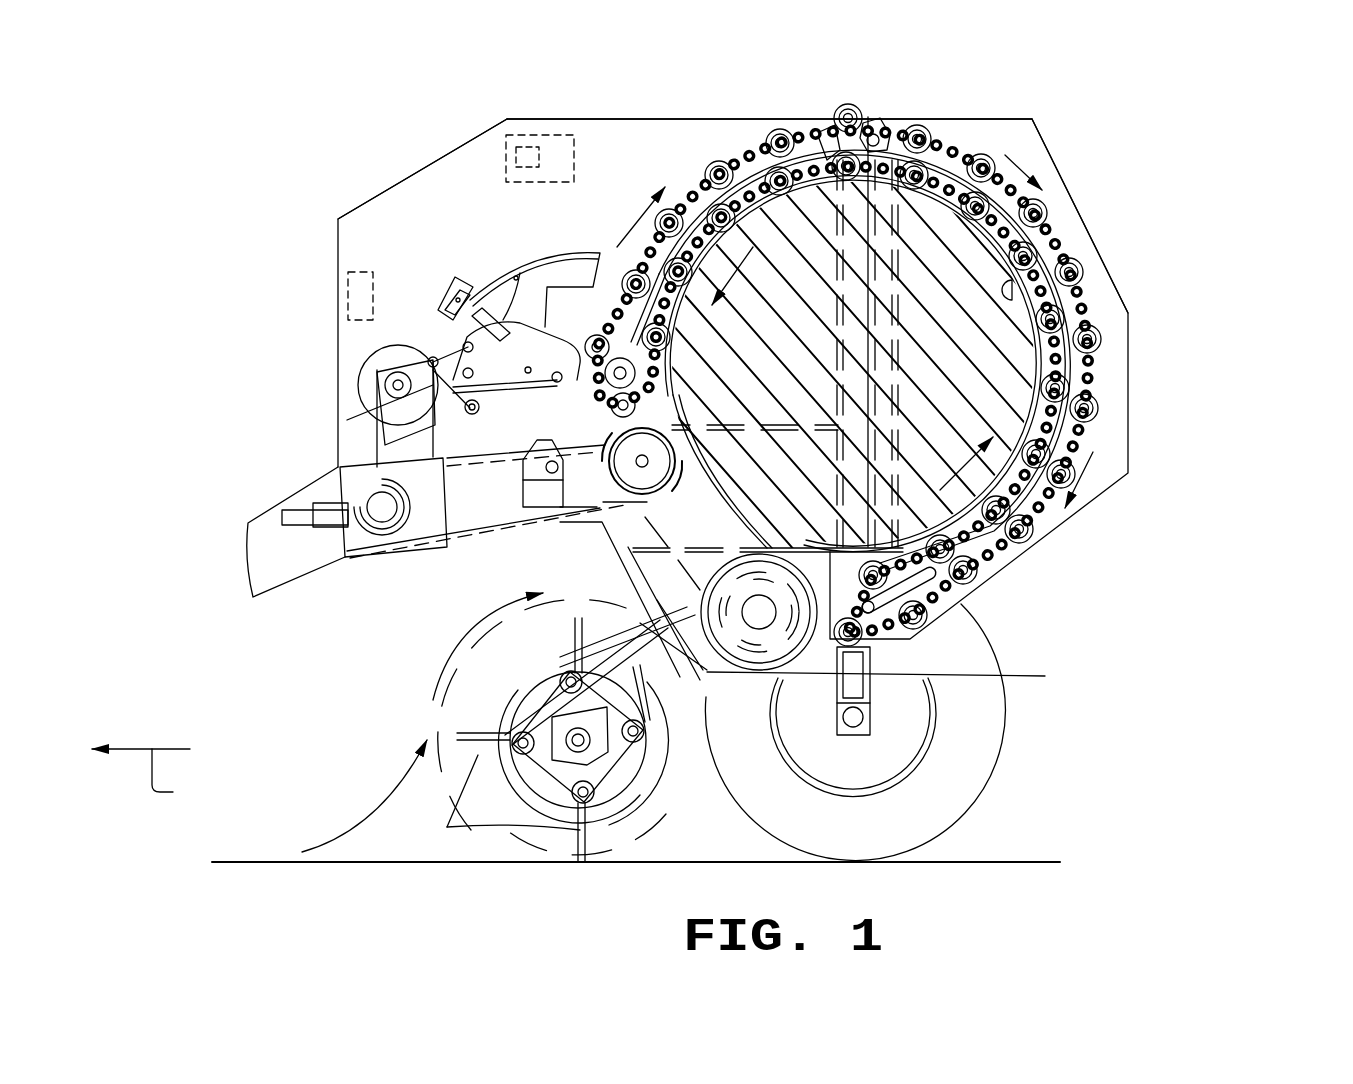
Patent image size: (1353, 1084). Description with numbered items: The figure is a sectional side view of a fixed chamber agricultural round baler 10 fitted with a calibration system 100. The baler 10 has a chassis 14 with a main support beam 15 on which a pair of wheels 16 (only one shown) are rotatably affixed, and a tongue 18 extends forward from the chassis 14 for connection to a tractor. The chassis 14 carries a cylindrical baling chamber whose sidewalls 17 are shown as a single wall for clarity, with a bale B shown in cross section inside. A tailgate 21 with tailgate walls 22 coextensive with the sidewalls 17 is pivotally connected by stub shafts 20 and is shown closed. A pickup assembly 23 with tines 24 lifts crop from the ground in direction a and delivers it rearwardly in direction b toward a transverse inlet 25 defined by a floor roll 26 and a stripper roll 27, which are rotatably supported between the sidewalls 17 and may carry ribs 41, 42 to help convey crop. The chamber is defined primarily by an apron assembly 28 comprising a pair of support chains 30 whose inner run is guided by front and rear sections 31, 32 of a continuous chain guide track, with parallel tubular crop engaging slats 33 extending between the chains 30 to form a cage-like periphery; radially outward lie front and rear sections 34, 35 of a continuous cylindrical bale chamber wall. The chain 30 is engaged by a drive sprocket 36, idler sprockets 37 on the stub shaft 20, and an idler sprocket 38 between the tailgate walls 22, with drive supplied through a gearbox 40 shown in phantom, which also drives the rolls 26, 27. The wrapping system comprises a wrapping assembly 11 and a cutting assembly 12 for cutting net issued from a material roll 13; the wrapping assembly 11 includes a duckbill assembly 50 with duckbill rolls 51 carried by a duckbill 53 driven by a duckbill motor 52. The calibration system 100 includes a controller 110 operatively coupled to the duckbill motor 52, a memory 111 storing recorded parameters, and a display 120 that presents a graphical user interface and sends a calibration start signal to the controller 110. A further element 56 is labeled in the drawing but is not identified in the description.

The round baler 10 is at (1193, 108).
The wrapping assembly 11 is at (452, 270).
The cutting assembly 12 is at (513, 482).
The material roll 13 is at (392, 370).
The chassis 14 is at (592, 118).
The main support beam 15 is at (870, 676).
The wheels 16 is at (993, 750).
The sidewalls 17 is at (440, 180).
The tongue 18 is at (277, 600).
The stub shafts 20 is at (880, 112).
The tailgate 21 is at (1100, 250).
The tailgate walls 22 is at (1110, 458).
The pickup assembly 23 is at (442, 723).
The tines 24 is at (494, 802).
The transverse inlet 25 is at (638, 535).
The floor roll 26 is at (740, 672).
The stripper roll 27 is at (607, 480).
The apron assembly 28 is at (1047, 223).
The support chains 30 is at (1083, 302).
The front section of chain guide track 31 is at (710, 190).
The rear section of chain guide track 32 is at (1027, 300).
The crop engaging slats 33 is at (778, 137).
The front section of bale chamber wall 34 is at (827, 147).
The rear section of bale chamber wall 35 is at (943, 167).
The drive sprocket 36 is at (600, 345).
The idler sprockets 37 is at (867, 112).
The idler sprocket 38 is at (930, 578).
The gearbox 40 is at (382, 525).
The ribs 41 is at (712, 565).
The ribs 42 is at (658, 486).
The duckbill assembly 50 is at (493, 278).
The duckbill rolls 51 is at (448, 345).
The duckbill motor 52 is at (518, 313).
The duckbill 53 is at (480, 408).
The forward travel direction 56 is at (149, 778).
The calibration system 100 is at (397, 258).
The controller 110 is at (525, 133).
The memory 111 is at (540, 157).
The display 120 is at (348, 288).
The bale B is at (1020, 357).
The direction arrow a is at (380, 813).
The direction arrow b is at (477, 630).